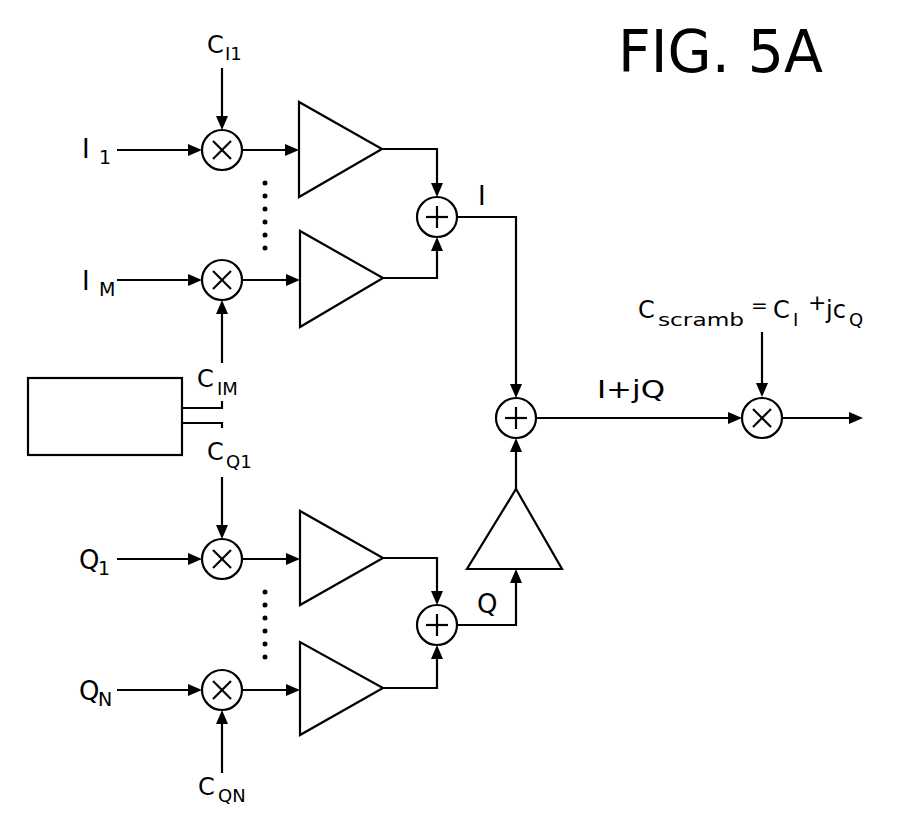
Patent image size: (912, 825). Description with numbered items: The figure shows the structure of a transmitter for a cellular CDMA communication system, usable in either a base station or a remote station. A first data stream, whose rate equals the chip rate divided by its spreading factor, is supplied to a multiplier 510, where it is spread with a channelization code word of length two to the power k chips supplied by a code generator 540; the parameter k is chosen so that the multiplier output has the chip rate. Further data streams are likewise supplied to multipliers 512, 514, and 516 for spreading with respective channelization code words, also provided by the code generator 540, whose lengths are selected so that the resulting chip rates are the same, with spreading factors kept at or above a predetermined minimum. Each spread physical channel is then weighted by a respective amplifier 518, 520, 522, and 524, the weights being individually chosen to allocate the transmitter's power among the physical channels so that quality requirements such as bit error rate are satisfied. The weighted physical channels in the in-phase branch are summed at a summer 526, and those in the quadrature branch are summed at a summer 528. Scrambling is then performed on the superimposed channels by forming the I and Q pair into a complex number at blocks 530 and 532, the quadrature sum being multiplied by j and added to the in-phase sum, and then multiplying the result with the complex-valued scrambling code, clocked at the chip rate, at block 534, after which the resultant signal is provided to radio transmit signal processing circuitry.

The multiplier 510 is at (207, 135).
The multiplier 512 is at (207, 265).
The multiplier 514 is at (209, 544).
The multiplier 516 is at (209, 673).
The amplifier 518 is at (340, 125).
The amplifier 520 is at (331, 308).
The amplifier 522 is at (341, 534).
The amplifier 524 is at (332, 717).
The summer 526 is at (417, 216).
The summer 528 is at (417, 624).
The block 530 is at (536, 520).
The block 532 is at (496, 417).
The block 534 is at (762, 438).
The code generator 540 is at (106, 377).